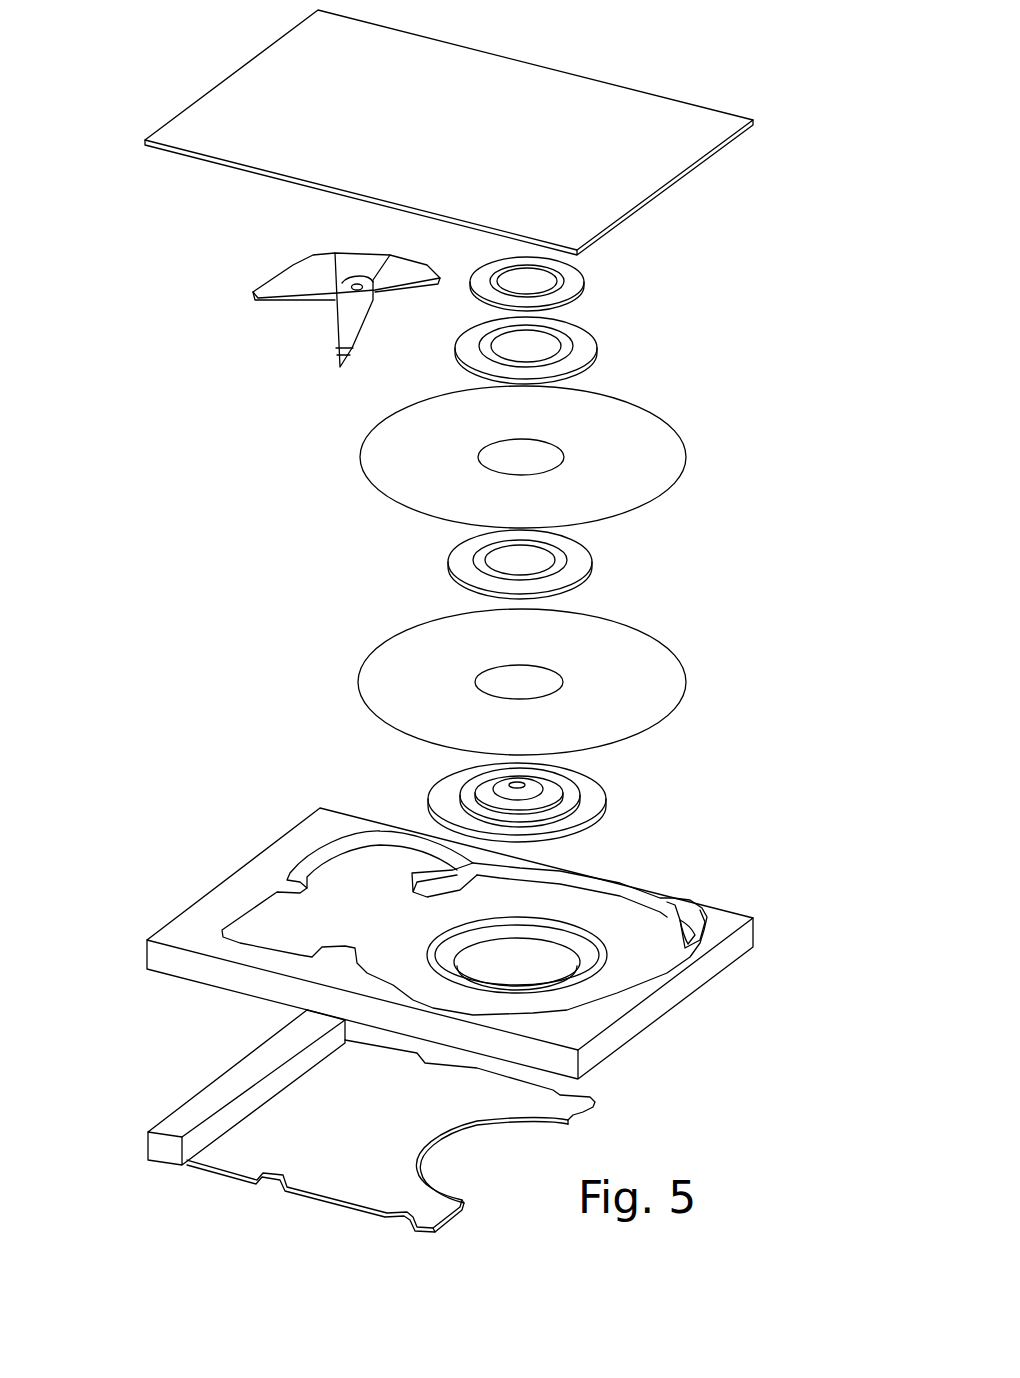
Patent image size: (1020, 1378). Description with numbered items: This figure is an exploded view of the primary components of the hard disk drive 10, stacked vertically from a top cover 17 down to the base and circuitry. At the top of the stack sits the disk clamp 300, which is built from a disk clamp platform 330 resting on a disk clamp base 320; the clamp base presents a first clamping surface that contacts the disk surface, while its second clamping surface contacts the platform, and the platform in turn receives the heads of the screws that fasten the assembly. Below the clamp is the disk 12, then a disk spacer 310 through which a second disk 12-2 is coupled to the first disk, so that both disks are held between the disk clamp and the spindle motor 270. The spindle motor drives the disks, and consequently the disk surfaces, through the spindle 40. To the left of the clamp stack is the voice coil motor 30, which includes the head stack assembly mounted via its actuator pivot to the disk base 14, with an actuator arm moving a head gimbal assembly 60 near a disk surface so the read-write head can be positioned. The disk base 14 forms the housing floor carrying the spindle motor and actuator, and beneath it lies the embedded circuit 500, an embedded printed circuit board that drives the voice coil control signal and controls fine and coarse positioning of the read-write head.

The hard disk drive 10 is at (120, 13).
The cover 17 is at (673, 187).
The voice coil motor 30 is at (233, 253).
The head gimbal assembly 60 is at (335, 352).
The disk clamp 300 is at (622, 320).
The disk clamp platform 330 is at (614, 257).
The disk clamp base 320 is at (614, 323).
The disk 12 is at (662, 493).
The disk spacer 310 is at (651, 537).
The second disk 12-2 is at (682, 699).
The spindle motor 270 is at (584, 805).
The spindle 40 is at (548, 792).
The disk base 14 is at (680, 1003).
The embedded circuit 500 is at (570, 1112).